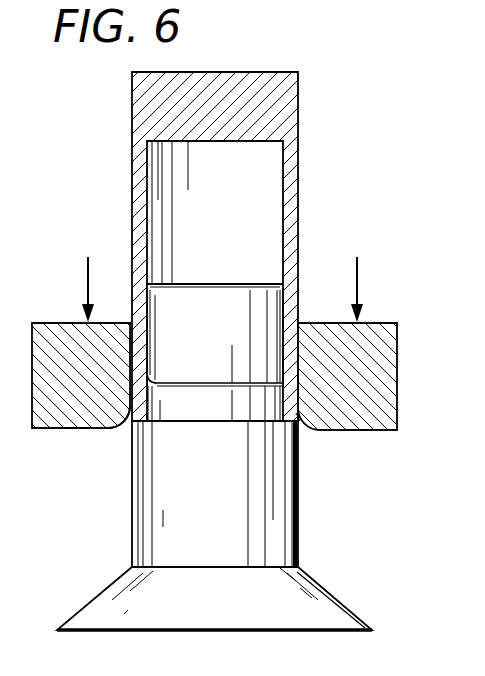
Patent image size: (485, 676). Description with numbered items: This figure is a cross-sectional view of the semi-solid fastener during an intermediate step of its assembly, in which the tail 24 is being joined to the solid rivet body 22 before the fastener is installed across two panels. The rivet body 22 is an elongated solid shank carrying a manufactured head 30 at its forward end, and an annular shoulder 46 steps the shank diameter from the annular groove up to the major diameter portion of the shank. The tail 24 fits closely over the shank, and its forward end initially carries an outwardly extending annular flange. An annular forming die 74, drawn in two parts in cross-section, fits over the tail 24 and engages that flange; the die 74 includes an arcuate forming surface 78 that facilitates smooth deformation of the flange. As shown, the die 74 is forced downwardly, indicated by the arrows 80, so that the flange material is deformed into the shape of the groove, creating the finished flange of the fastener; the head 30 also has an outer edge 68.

The rivet body 22 is at (306, 510).
The tail 24 is at (306, 109).
The manufactured head 30 is at (229, 611).
The annular shoulder 46 is at (297, 413).
The flange outer edge 68 is at (128, 632).
The annular forming die 74 is at (385, 320).
The arcuate forming surface 78 is at (112, 427).
The applied force arrows 80 is at (86, 283).